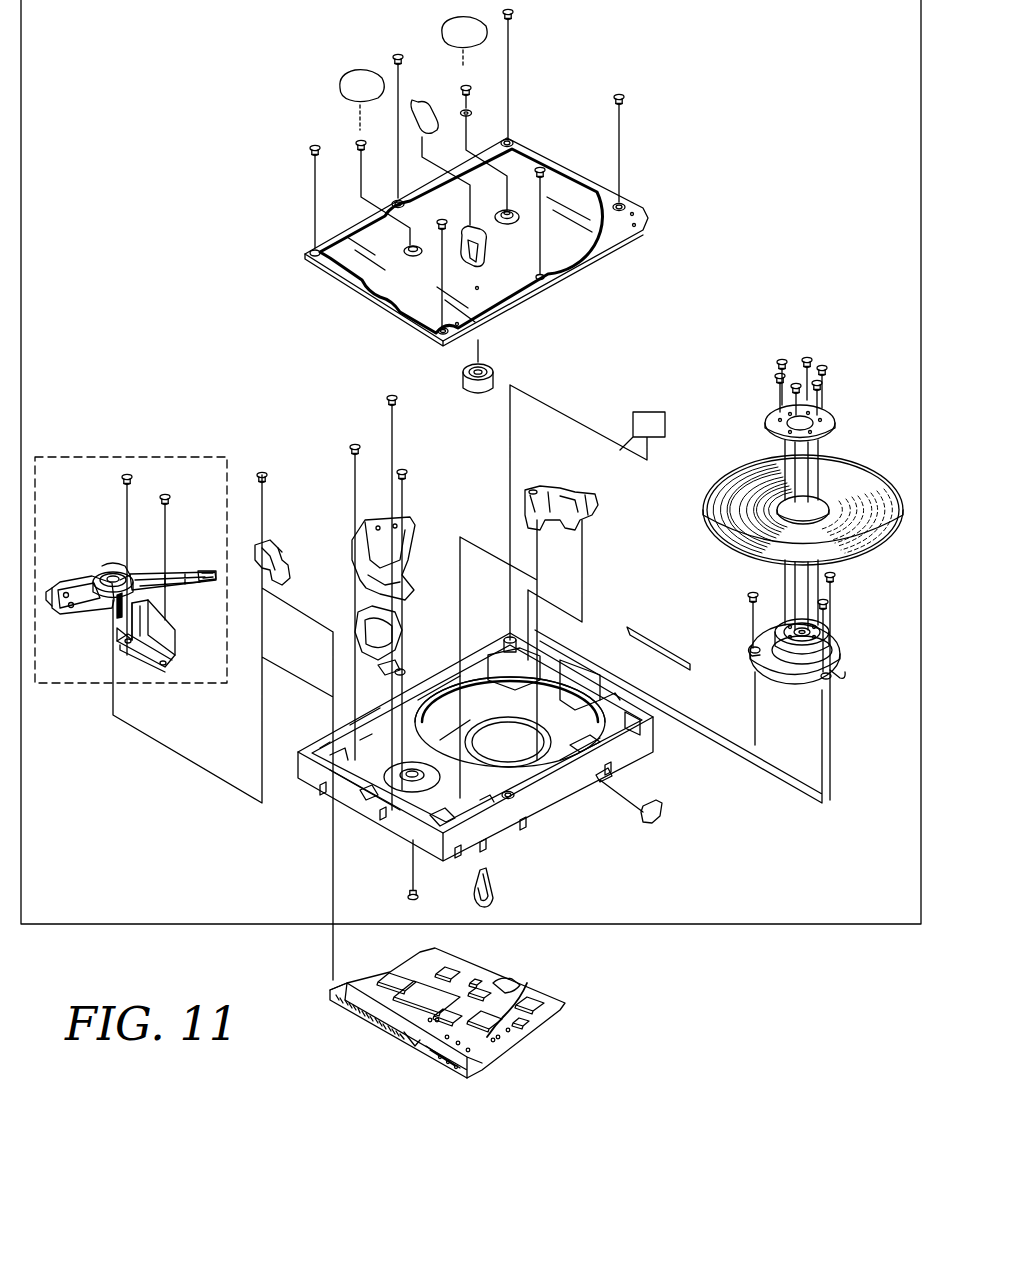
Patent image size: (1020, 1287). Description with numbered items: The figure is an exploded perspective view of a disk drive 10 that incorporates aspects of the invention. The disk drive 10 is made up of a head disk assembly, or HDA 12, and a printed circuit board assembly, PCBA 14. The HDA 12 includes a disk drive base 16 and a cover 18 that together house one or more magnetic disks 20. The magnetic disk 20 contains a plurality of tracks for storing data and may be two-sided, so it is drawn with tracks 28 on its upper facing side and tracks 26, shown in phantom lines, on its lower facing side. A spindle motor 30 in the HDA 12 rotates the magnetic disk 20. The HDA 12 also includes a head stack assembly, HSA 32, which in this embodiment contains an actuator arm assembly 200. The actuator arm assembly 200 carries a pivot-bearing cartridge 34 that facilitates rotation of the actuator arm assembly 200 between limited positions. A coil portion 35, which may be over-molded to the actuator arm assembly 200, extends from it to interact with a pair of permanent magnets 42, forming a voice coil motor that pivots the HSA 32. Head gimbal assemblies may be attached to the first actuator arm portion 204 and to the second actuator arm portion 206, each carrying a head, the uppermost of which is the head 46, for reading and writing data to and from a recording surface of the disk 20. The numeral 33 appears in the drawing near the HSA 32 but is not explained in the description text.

The disk drive 10 is at (749, 948).
The HDA 12 is at (640, 927).
The PCBA 14 is at (503, 1047).
The disk drive base 16 is at (537, 822).
The cover 18 is at (608, 240).
The magnetic disk 20 is at (730, 477).
The tracks 26 is at (784, 533).
The tracks 28 is at (722, 512).
The spindle motor 30 is at (738, 626).
The HSA 32 is at (131, 547).
The head stack 33 is at (172, 560).
The pivot-bearing cartridge 34 is at (118, 573).
The coil portion 35 is at (73, 583).
The permanent magnets 42 is at (352, 542).
The head 46 is at (207, 569).
The actuator arm assembly 200 is at (98, 566).
The first actuator arm portion 204 is at (140, 570).
The second actuator arm portion 206 is at (173, 592).